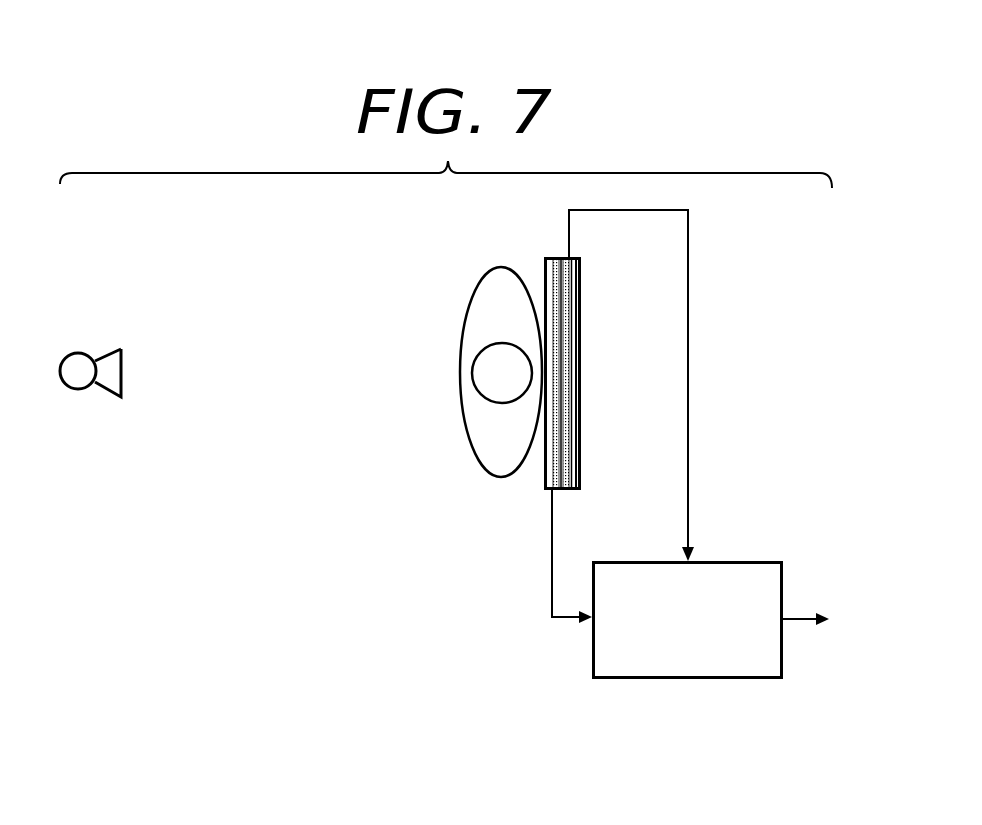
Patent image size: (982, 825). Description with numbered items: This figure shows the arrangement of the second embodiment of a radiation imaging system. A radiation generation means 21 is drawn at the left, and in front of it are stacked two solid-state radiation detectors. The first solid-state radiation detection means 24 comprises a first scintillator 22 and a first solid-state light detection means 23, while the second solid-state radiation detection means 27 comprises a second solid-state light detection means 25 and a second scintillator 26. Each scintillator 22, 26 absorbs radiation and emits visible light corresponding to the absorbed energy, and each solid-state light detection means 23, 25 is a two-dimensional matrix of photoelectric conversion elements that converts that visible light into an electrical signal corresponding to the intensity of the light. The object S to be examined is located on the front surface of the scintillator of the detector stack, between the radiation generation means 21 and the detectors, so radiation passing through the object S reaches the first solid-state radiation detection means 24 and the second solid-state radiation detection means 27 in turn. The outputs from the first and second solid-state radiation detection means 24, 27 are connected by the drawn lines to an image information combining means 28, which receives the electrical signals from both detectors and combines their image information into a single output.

The radiation generation means 21 is at (80, 353).
The first scintillator 22 is at (543, 488).
The first solid-state light detection means 23 is at (544, 492).
The first solid-state radiation detection means 24 is at (514, 413).
The second solid-state light detection means 25 is at (572, 278).
The second scintillator 26 is at (624, 257).
The second solid-state radiation detection means 27 is at (620, 372).
The image information combining means 28 is at (741, 560).
The object to be examined S is at (467, 304).